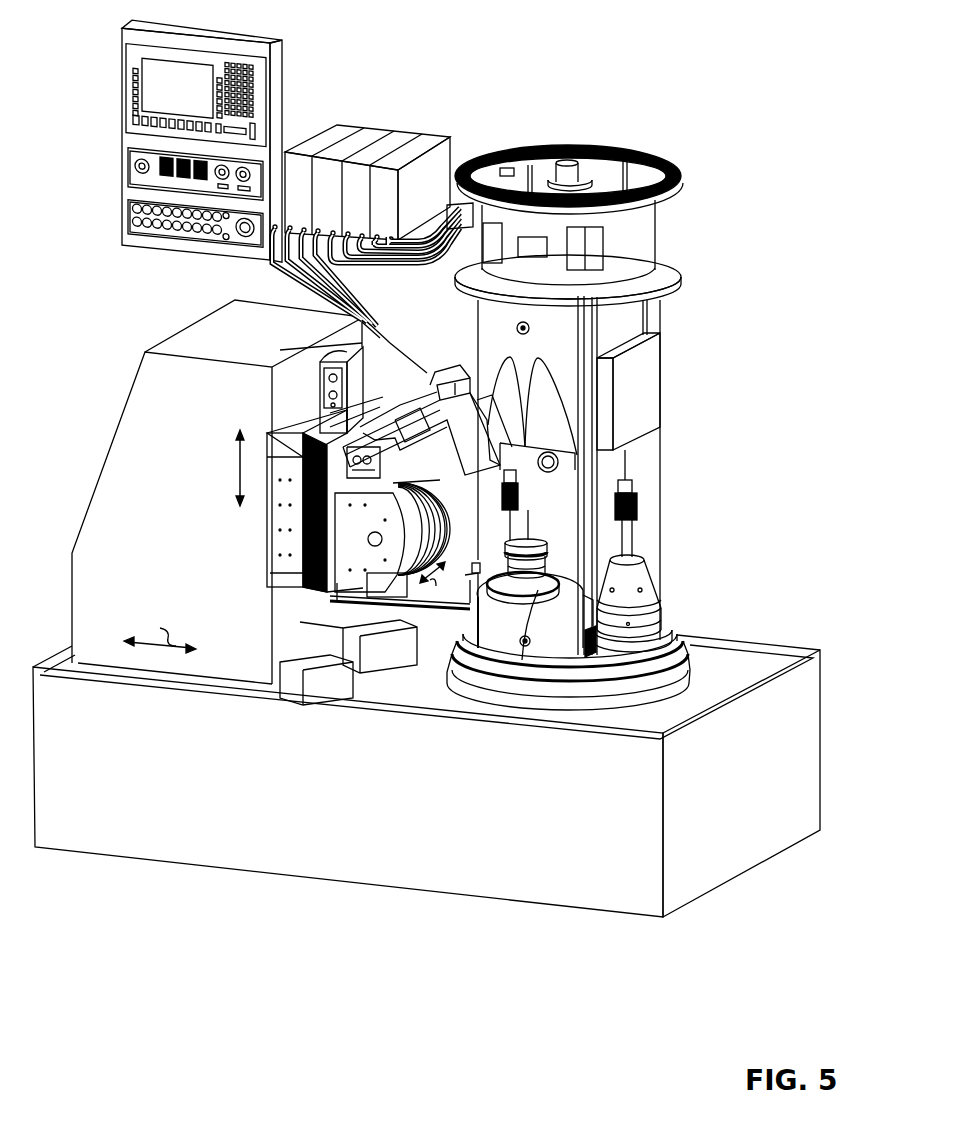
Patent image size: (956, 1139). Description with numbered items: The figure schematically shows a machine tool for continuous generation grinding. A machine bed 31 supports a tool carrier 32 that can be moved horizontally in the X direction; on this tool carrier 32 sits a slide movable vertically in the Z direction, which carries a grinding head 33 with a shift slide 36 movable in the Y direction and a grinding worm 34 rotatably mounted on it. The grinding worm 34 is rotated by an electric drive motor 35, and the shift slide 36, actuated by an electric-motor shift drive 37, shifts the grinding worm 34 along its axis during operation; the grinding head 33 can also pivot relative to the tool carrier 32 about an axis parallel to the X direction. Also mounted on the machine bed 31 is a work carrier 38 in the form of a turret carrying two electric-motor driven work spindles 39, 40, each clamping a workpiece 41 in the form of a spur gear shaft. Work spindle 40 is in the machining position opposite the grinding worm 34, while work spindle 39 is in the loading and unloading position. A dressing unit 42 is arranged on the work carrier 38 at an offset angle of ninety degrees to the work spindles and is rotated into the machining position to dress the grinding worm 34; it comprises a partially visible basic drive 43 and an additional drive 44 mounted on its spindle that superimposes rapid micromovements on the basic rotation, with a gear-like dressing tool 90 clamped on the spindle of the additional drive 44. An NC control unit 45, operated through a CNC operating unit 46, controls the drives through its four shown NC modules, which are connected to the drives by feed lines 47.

The machine bed 31 is at (720, 868).
The tool carrier 32 is at (125, 468).
The grinding head 33 is at (280, 552).
The grinding worm 34 is at (367, 598).
The drive motor 35 is at (477, 393).
The shift slide 36 is at (360, 342).
The shift drive 37 is at (378, 327).
The work carrier 38 is at (686, 287).
The work spindle 39 is at (643, 607).
The work spindle 40 is at (470, 578).
The workpiece 41 is at (643, 507).
The dressing unit 42 is at (488, 615).
The basic drive 43 is at (537, 567).
The additional drive 44 is at (588, 585).
The NC control unit 45 is at (372, 127).
The CNC operating unit 46 is at (122, 82).
The feed lines 47 is at (402, 267).
The dressing tool 90 is at (530, 548).